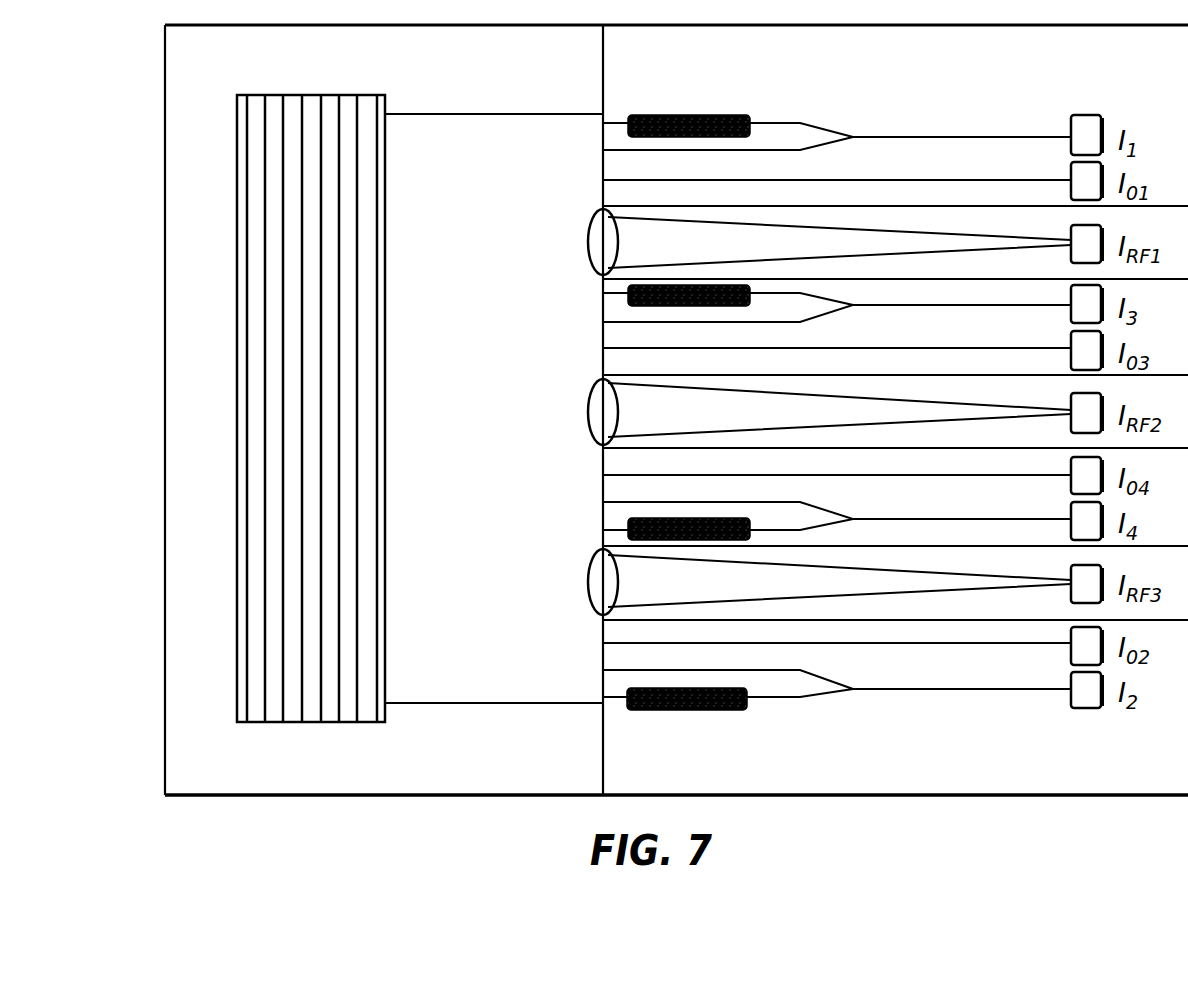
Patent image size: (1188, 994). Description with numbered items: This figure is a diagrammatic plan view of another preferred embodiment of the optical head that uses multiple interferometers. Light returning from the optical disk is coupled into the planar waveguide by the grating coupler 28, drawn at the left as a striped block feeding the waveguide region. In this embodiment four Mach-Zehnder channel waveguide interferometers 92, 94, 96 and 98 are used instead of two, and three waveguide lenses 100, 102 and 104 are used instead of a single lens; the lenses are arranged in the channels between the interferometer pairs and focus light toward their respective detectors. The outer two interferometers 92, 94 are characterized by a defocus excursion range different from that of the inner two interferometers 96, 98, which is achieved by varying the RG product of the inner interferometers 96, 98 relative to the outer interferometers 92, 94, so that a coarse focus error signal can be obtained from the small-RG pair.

The grating coupler 28 is at (237, 633).
The M-Z channel waveguide interferometer 92 is at (603, 140).
The M-Z channel waveguide interferometer 94 is at (603, 690).
The M-Z channel waveguide interferometer 96 is at (603, 308).
The M-Z channel waveguide interferometer 98 is at (603, 518).
The waveguide lens 100 is at (588, 412).
The waveguide lens 102 is at (587, 243).
The waveguide lens 104 is at (588, 582).